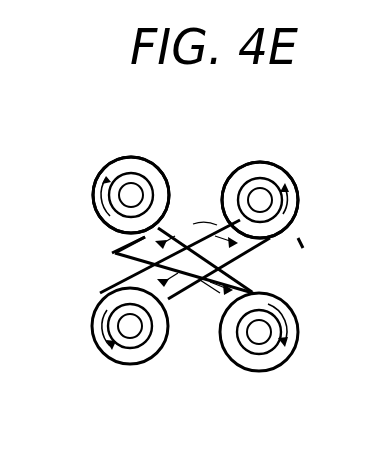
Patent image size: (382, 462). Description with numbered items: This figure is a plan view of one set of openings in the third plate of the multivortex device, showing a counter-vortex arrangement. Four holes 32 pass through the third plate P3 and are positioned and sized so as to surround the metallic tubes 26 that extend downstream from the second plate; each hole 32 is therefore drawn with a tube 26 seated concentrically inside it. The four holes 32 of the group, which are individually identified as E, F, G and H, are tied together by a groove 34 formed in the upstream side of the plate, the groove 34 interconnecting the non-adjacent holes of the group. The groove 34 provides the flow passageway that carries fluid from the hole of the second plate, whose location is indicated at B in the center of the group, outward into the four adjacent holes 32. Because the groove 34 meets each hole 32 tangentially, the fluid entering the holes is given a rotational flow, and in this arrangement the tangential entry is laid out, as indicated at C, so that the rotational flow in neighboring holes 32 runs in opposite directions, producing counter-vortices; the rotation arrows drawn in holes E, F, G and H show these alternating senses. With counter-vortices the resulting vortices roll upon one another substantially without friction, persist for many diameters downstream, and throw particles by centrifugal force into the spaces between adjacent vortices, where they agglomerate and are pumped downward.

The roller E is at (115, 157).
The roller F is at (278, 160).
The roller G is at (267, 364).
The roller H is at (115, 357).
The holes 32 is at (243, 158).
The metallic tubes 26 is at (292, 317).
The groove 34 is at (112, 253).
The fold position C is at (78, 256).
The central lumen B is at (200, 300).